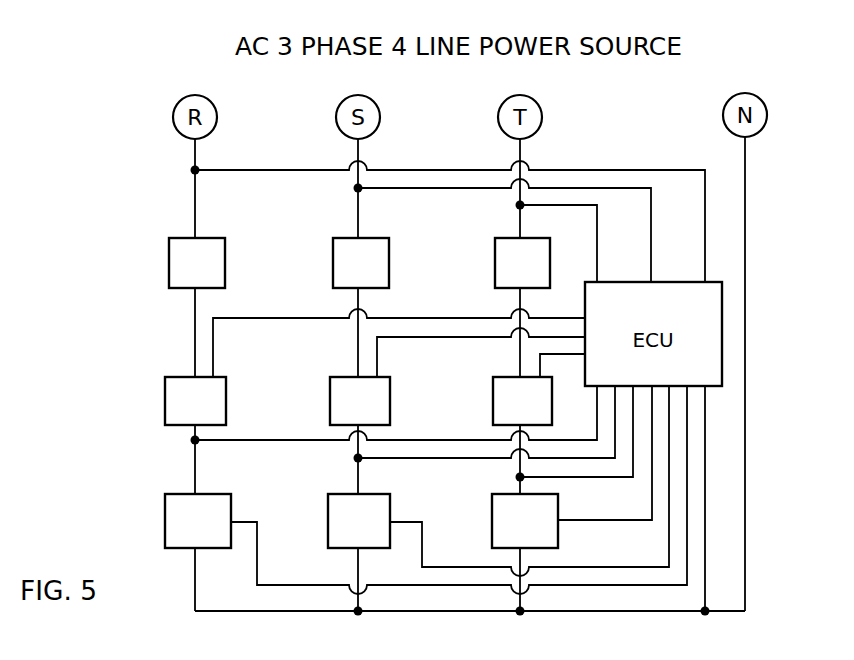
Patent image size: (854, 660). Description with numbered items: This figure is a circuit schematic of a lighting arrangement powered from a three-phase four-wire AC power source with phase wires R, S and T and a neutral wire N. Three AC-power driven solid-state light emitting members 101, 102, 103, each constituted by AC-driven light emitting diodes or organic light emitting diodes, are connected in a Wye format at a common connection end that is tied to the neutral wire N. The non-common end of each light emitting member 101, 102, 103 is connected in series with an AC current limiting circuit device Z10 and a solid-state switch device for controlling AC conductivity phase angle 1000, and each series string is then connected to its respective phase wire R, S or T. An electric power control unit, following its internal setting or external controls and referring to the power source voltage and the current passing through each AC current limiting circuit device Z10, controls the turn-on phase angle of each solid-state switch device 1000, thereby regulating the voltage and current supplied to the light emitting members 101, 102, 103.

The AC current limiting circuit device Z10 is at (169, 268).
The solid-state switch device for controlling AC conductivity phase angle 1000 is at (165, 405).
The AC-power driven solid-state light emitting member 101 is at (198, 521).
The AC-power driven solid-state light emitting member 102 is at (359, 521).
The AC-power driven solid-state light emitting member 103 is at (525, 521).